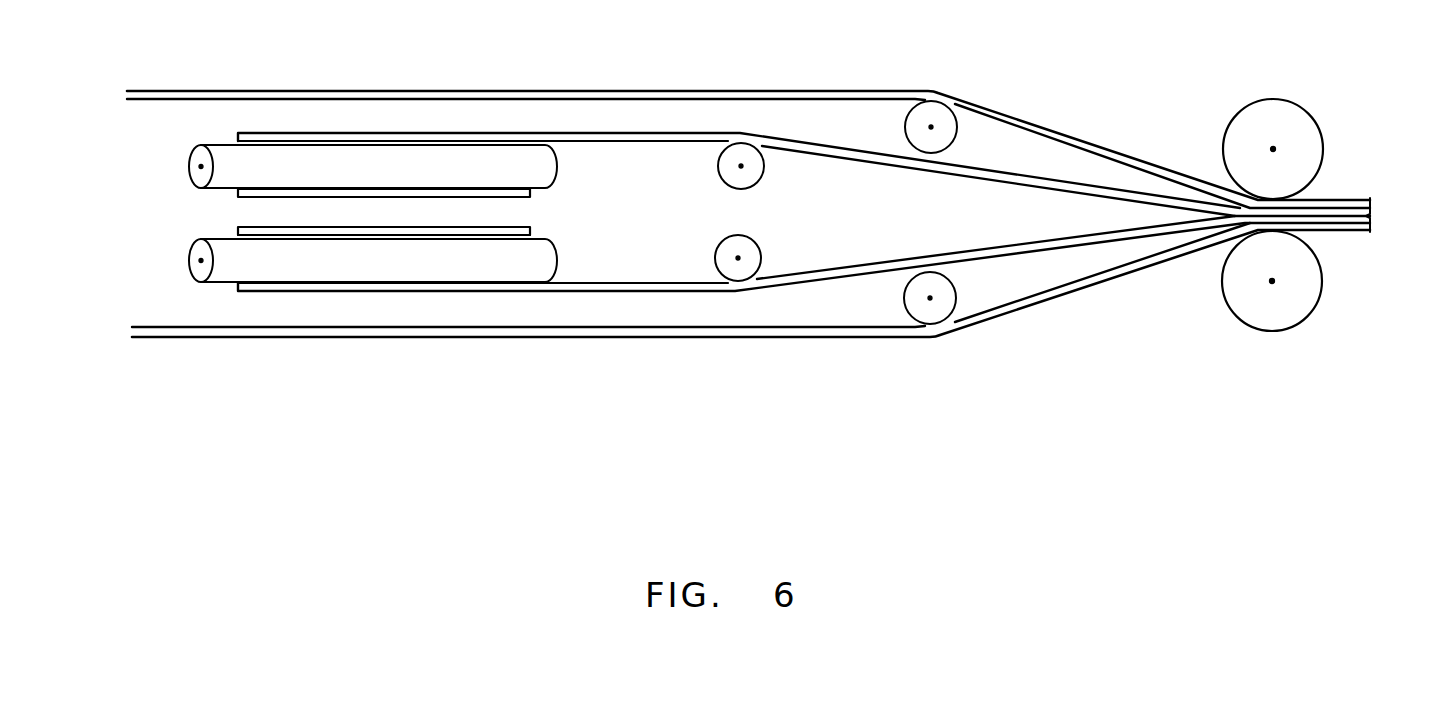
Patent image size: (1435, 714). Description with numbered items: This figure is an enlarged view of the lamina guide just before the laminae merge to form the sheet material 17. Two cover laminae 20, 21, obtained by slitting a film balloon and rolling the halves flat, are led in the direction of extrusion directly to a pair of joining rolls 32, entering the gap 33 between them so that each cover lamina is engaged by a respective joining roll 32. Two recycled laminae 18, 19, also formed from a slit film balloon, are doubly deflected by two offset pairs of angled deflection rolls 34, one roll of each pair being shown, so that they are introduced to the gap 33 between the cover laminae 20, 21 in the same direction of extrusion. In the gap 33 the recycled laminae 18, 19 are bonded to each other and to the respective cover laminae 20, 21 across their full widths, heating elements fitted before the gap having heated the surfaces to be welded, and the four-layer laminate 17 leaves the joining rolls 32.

The sheet material 17 is at (1360, 184).
The recycled lamina 18 is at (658, 137).
The recycled lamina 19 is at (267, 229).
The cover lamina 20 is at (453, 90).
The cover lamina 21 is at (800, 337).
The joining rolls 32 is at (1300, 130).
The gap 33 is at (1217, 257).
The angled deflection rolls 34 is at (227, 152).